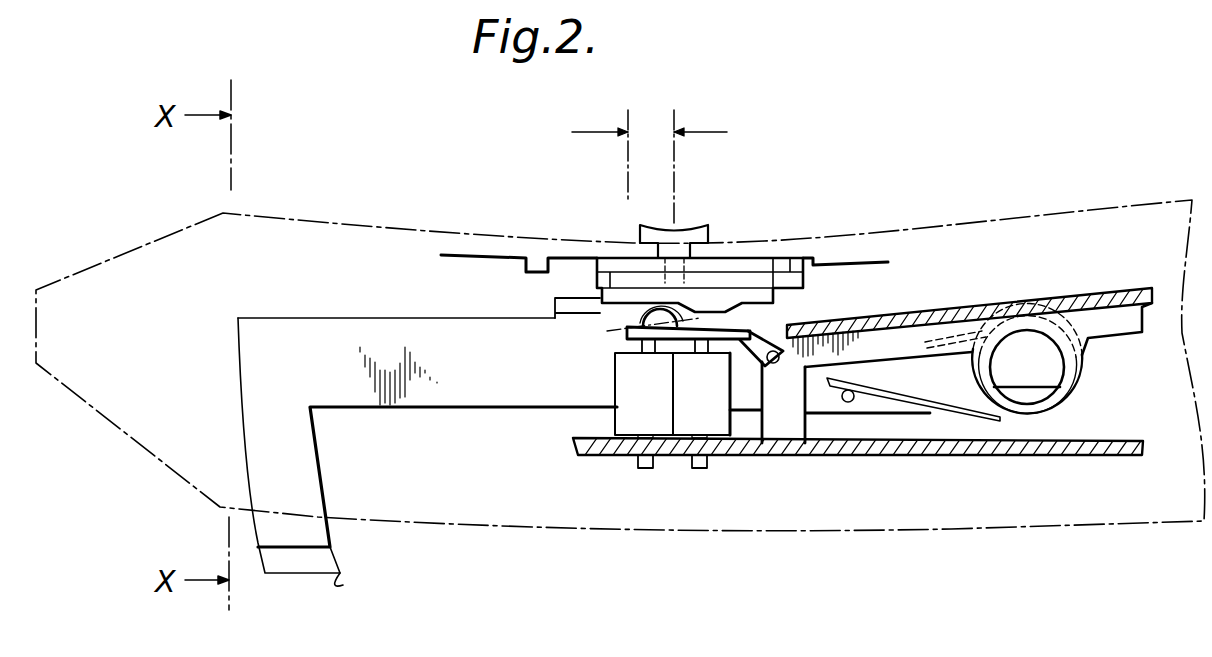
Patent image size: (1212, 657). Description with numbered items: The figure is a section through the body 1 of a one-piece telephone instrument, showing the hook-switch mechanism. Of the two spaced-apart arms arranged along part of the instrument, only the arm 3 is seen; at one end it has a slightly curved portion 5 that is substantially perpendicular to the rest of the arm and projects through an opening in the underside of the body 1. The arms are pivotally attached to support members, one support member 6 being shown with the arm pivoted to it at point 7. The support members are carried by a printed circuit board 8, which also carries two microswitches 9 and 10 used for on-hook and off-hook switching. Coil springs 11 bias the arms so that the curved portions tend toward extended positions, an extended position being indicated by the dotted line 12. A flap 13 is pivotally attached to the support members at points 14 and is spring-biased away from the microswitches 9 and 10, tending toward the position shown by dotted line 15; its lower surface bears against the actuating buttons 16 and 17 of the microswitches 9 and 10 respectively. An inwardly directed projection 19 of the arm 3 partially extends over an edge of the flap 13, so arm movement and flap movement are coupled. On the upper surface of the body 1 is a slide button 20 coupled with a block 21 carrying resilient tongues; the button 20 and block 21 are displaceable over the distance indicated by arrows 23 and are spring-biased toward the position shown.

The body 1 is at (797, 239).
The second arm 3 is at (423, 326).
The curved portion 5 is at (300, 480).
The support member 6 is at (898, 342).
The pivot point 7 is at (1050, 373).
The printed circuit board 8 is at (1085, 437).
The microswitch 9 is at (632, 410).
The microswitch 10 is at (695, 418).
The coil spring 11 is at (919, 405).
The dotted line 12 is at (345, 583).
The flap 13 is at (740, 332).
The pivot point 14 is at (777, 365).
The dotted line 15 is at (612, 330).
The actuating button 16 is at (627, 347).
The actuating button 17 is at (700, 342).
The inwardly directed projection 19 is at (555, 300).
The slide button 20 is at (698, 226).
The block 21 is at (793, 299).
The arrows 23 is at (649, 167).